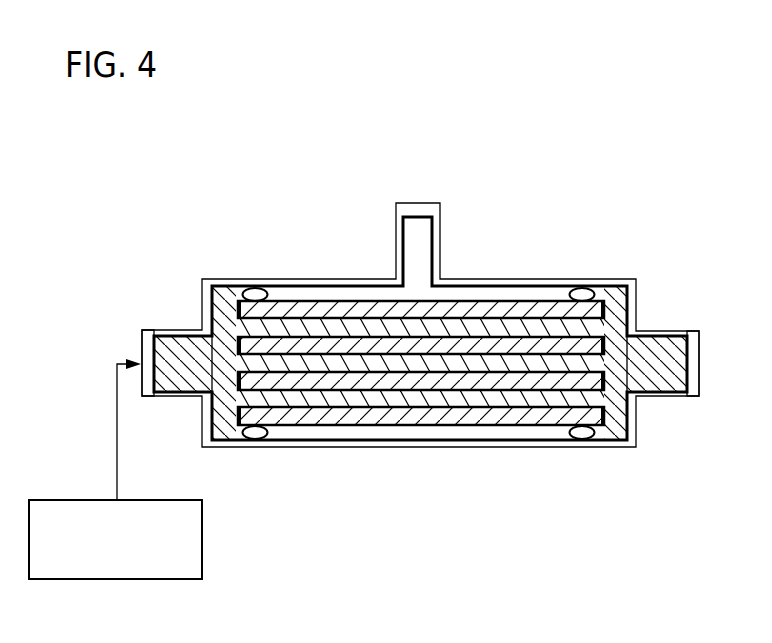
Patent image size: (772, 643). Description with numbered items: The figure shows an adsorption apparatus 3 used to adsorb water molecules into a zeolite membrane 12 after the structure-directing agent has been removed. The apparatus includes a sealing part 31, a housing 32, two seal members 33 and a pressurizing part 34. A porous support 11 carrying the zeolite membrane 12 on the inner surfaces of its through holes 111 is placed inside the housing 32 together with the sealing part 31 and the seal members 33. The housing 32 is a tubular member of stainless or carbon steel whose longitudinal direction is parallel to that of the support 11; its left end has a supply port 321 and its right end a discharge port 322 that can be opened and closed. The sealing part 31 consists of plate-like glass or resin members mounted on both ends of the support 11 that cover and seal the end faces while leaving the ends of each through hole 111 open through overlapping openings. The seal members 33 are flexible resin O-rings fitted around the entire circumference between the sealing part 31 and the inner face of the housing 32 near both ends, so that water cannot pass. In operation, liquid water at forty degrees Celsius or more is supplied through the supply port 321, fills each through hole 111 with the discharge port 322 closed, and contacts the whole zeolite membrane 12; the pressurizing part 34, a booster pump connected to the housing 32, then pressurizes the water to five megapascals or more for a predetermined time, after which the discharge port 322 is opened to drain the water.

The adsorption apparatus 3 is at (167, 187).
The support 11 is at (540, 418).
The zeolite membrane 12 is at (480, 352).
The through hole 111 is at (376, 368).
The sealing part 31 is at (232, 312).
The housing 32 is at (223, 283).
The seal member 33 is at (258, 292).
The pressurizing part 34 is at (203, 543).
The supply port 321 is at (165, 339).
The discharge port 322 is at (675, 334).